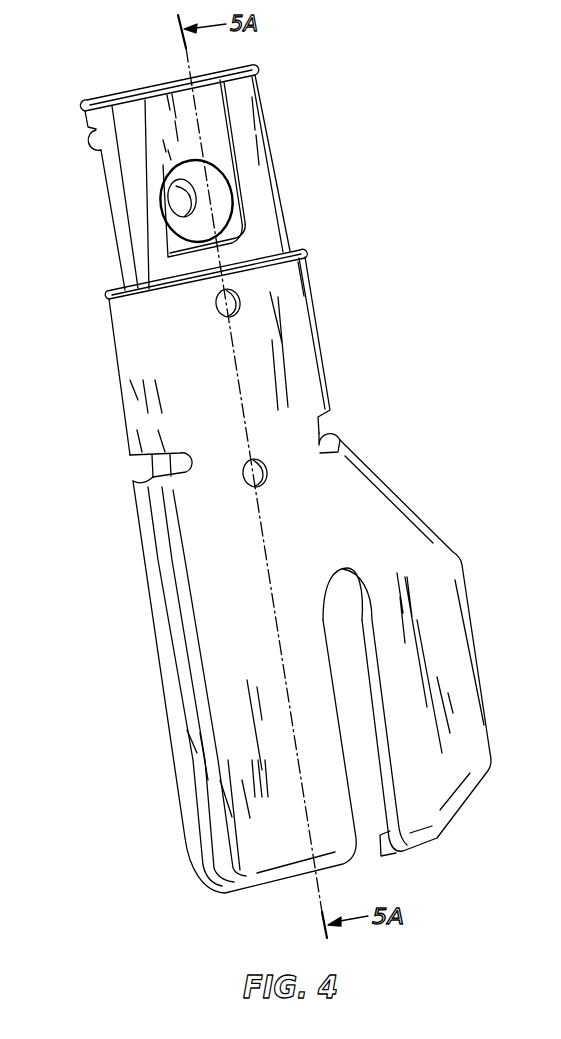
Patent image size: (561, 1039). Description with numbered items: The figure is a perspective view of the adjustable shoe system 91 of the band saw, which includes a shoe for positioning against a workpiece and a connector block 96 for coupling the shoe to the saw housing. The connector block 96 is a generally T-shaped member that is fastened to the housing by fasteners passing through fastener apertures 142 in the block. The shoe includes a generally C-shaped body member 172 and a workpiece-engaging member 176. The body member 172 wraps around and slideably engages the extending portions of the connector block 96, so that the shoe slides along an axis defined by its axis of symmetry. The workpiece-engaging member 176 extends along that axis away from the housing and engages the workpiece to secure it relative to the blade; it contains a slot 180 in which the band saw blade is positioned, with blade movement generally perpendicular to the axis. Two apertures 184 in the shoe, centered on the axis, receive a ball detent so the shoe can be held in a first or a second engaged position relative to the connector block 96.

The adjustable shoe system 91 is at (377, 163).
The connector block 96 is at (247, 143).
The fastener aperture 142 is at (181, 213).
The body member 172 is at (300, 302).
The apertures 184 is at (238, 310).
The workpiece-engaging member 176 is at (231, 688).
The slot 180 is at (365, 798).